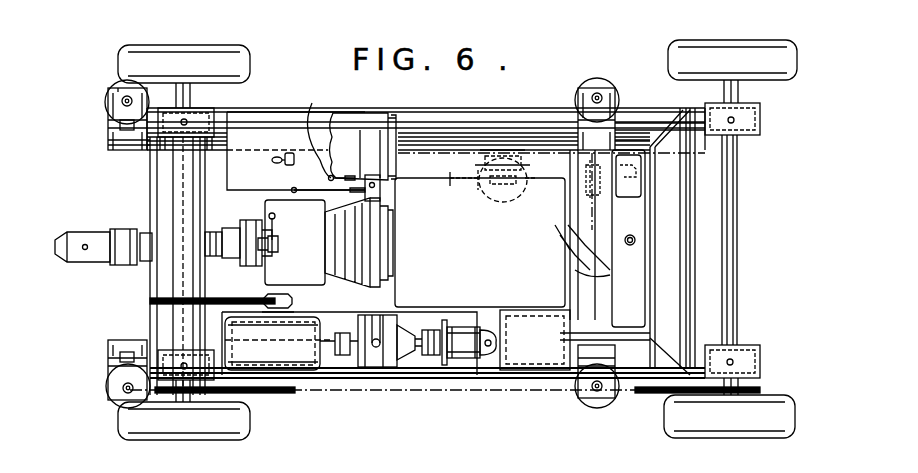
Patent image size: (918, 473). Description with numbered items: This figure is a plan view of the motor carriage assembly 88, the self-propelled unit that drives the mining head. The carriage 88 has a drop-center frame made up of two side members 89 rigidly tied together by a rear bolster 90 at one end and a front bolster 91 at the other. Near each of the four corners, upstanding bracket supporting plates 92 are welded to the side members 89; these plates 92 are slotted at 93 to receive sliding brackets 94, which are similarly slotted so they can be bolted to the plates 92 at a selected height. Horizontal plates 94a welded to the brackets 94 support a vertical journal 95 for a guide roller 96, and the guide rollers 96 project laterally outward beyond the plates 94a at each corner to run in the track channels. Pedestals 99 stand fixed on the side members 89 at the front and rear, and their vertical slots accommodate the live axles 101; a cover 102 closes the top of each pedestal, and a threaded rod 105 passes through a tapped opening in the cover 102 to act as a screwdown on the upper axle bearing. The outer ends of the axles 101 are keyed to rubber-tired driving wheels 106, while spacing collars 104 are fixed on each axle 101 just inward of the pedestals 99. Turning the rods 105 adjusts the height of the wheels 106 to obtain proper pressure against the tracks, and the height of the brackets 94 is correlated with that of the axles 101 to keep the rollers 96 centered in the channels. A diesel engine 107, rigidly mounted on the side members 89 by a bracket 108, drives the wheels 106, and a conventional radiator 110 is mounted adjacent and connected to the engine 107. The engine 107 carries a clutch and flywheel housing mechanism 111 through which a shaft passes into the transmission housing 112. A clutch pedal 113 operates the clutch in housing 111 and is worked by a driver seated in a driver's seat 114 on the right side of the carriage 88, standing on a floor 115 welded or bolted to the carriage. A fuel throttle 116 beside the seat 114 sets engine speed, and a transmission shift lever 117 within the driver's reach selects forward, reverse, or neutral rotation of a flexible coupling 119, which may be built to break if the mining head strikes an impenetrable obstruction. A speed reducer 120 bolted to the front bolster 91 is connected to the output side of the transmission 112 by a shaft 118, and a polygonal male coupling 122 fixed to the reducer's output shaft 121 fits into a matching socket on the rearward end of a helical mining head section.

The motor carriage assembly 88 is at (484, 370).
The side members 89 is at (497, 108).
The rear bolster 90 is at (681, 259).
The front bolster 91 is at (150, 172).
The bracket supporting plates 92 is at (115, 135).
The slots 93 is at (108, 146).
The sliding brackets 94 is at (120, 125).
The horizontal plates 94a is at (110, 91).
The vertical journal 95 is at (122, 101).
The guide rollers 96 is at (116, 86).
The pedestals 99 is at (762, 133).
The live axles 101 is at (185, 268).
The cover 102 is at (765, 120).
The spacing collars 104 is at (198, 108).
The threaded rod 105 is at (735, 362).
The driving wheels 106 is at (176, 50).
The diesel engine 107 is at (500, 260).
The bracket 108 is at (380, 180).
The radiator 110 is at (639, 220).
The clutch and flywheel housing mechanism 111 is at (355, 246).
The transmission housing 112 is at (308, 273).
The clutch pedal 113 is at (290, 152).
The driver's seat 114 is at (340, 125).
The floor 115 is at (262, 137).
The fuel throttle 116 is at (311, 95).
The transmission shift lever 117 is at (274, 218).
The shaft 118 is at (220, 258).
The flexible coupling 119 is at (246, 226).
The speed reducer 120 is at (170, 216).
The output shaft 121 is at (140, 262).
The male coupling 122 is at (78, 230).